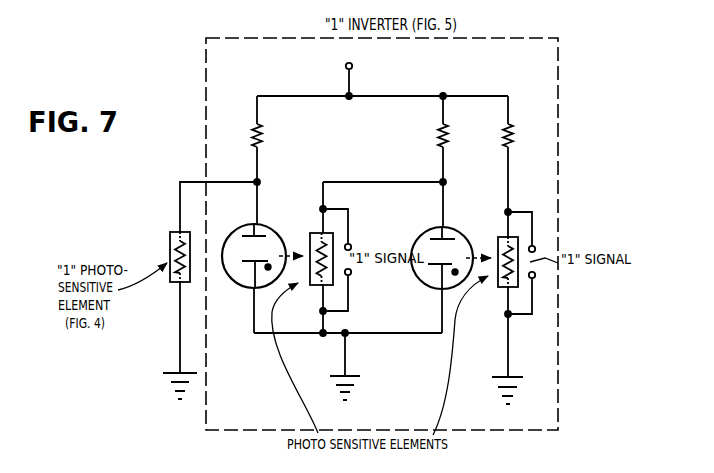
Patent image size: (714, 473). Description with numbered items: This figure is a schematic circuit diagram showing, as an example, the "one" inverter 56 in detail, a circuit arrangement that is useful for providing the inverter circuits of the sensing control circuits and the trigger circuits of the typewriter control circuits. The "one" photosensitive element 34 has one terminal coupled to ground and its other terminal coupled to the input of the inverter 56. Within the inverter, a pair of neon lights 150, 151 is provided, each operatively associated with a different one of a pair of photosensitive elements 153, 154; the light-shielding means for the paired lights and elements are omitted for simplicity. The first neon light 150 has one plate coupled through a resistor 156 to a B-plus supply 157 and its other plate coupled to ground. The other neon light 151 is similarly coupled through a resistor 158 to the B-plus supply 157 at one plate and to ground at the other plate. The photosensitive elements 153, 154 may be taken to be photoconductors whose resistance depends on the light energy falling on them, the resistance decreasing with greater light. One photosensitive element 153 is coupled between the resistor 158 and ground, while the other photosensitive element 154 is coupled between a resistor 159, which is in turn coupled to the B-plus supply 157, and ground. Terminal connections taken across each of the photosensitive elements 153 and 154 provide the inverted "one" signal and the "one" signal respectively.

The "1" photosensitive element 34 is at (170, 246).
The "1" inverter 56 is at (559, 78).
The neon light 150 is at (263, 226).
The neon light 151 is at (449, 229).
The photosensitive element 153 is at (310, 240).
The photosensitive element 154 is at (498, 243).
The resistor 156 is at (253, 131).
The B+ supply 157 is at (353, 67).
The resistor 158 is at (438, 132).
The resistor 159 is at (505, 130).